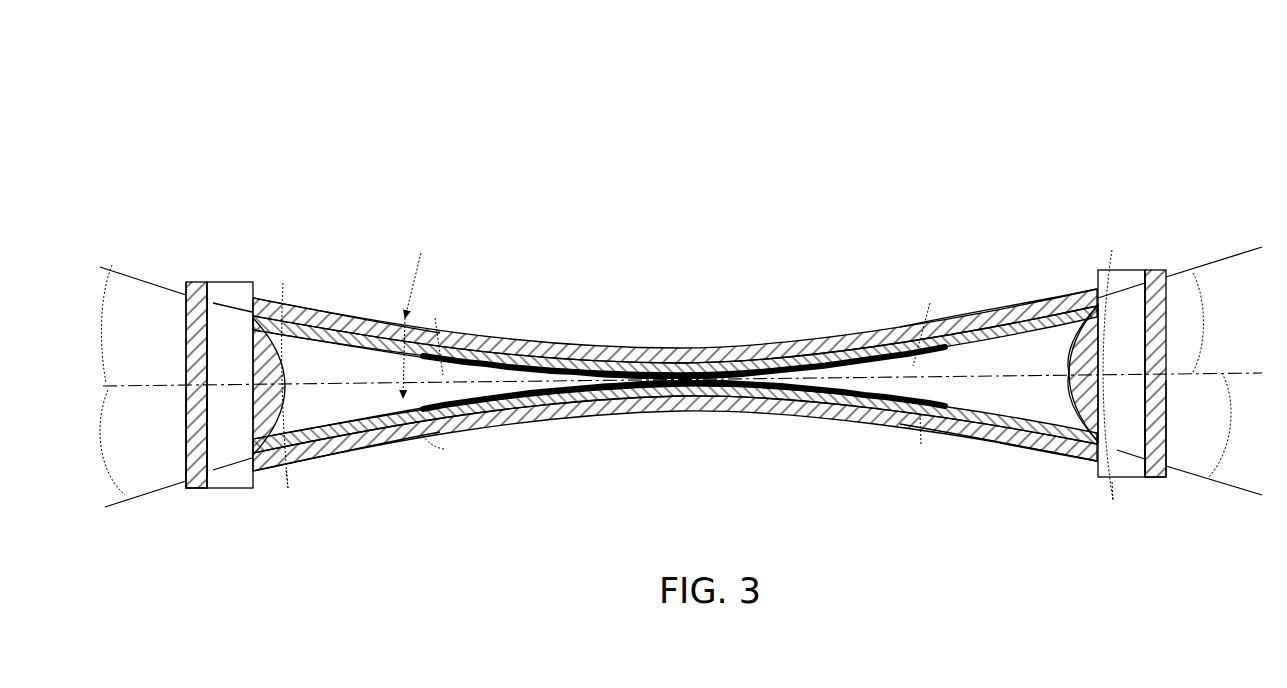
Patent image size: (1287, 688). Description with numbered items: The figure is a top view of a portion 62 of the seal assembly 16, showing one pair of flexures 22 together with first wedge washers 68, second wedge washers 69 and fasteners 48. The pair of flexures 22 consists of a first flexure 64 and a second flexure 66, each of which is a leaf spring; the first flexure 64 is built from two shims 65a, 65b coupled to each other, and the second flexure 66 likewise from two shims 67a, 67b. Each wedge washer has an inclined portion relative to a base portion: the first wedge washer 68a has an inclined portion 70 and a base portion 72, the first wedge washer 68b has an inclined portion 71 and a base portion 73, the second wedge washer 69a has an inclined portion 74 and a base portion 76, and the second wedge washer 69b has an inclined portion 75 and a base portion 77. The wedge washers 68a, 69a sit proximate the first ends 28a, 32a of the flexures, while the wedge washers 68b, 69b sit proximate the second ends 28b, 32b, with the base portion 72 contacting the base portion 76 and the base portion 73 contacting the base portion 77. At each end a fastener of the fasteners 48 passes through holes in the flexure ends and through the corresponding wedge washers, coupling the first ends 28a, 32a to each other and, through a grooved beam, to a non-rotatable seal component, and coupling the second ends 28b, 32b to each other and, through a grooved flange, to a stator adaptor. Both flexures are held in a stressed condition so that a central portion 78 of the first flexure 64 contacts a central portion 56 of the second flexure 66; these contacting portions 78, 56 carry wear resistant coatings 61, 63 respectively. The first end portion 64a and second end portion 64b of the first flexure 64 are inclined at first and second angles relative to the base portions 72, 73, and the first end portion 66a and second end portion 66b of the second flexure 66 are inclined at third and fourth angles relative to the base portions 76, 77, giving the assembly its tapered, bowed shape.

The seal assembly 16 is at (1108, 72).
The portion of the seal assembly 62 is at (270, 175).
The first end of the second flexure 32a is at (197, 282).
The second end of the second flexure 32b is at (197, 489).
The fasteners 48 is at (221, 282).
The first end of the first flexure 28a is at (1165, 272).
The second end of the first flexure 28b is at (1166, 478).
The first flexure 64 is at (335, 317).
The first end portion of the first flexure 64a is at (960, 320).
The second end portion of the first flexure 64b is at (299, 299).
The shim 65a is at (374, 342).
The shim 65b is at (376, 328).
The second flexure 66 is at (405, 450).
The first end portion of the second flexure 66a is at (966, 440).
The second end portion of the second flexure 66b is at (315, 460).
The shim 67a is at (398, 398).
The shim 67b is at (349, 437).
The wear resistant coating 61 is at (473, 370).
The wear resistant coating 63 is at (833, 397).
The portion of the first flexure 78 is at (647, 345).
The portion of the second flexure 56 is at (648, 412).
The base portion 77 is at (284, 403).
The first wedge washers 68 is at (1075, 327).
The first wedge washer 68a is at (1068, 345).
The base portion 76 is at (1068, 378).
The first wedge washer 68b is at (184, 340).
The second wedge washer 69b is at (183, 424).
The second wedge washers 69 is at (186, 454).
The second wedge washer 69a is at (1058, 444).
The base portion 73 is at (249, 355).
The base portion 72 is at (1110, 367).
The inclined portion 71 is at (285, 371).
The inclined portion 75 is at (290, 492).
The inclined portion 70 is at (1112, 362).
The inclined portion 74 is at (1117, 502).
The pair of flexures 22 is at (421, 312).